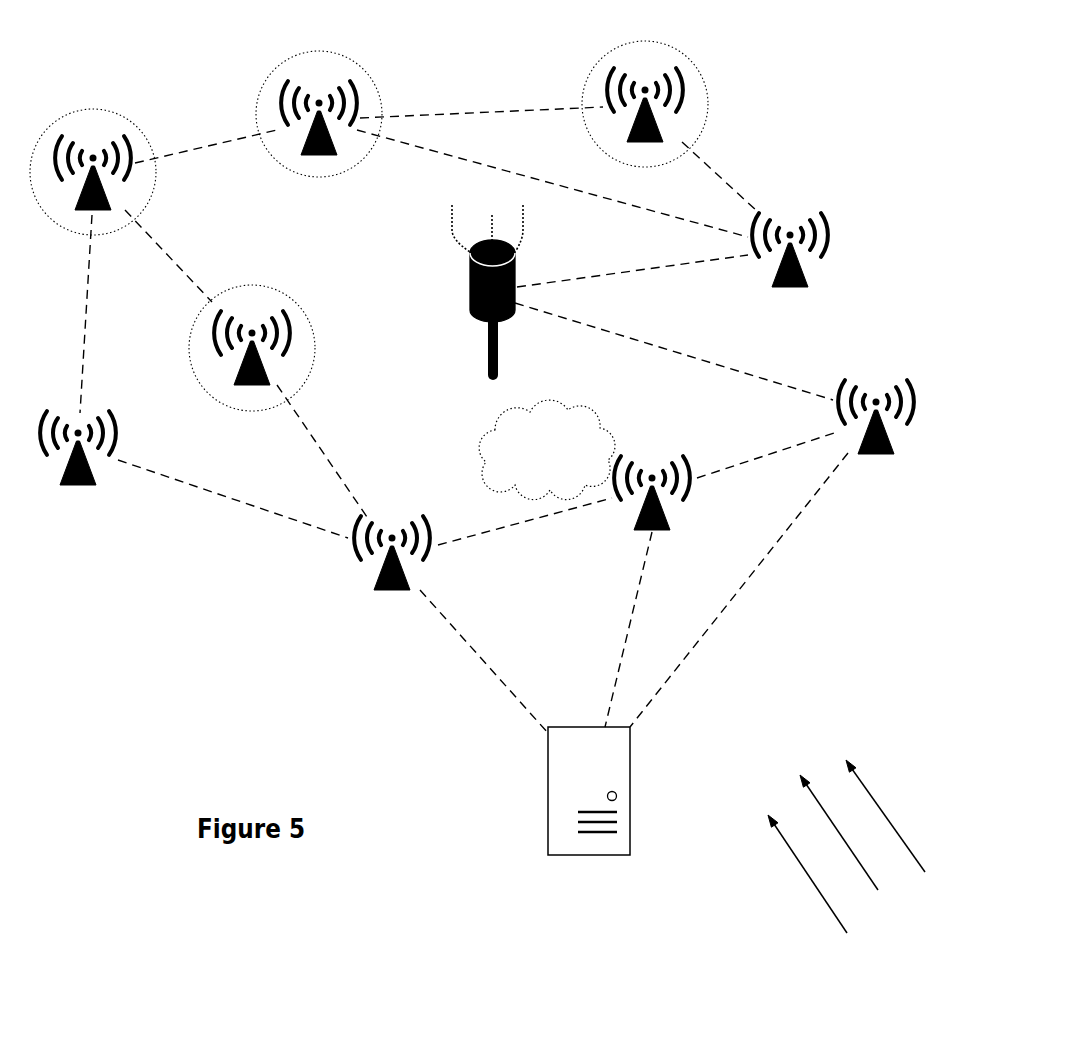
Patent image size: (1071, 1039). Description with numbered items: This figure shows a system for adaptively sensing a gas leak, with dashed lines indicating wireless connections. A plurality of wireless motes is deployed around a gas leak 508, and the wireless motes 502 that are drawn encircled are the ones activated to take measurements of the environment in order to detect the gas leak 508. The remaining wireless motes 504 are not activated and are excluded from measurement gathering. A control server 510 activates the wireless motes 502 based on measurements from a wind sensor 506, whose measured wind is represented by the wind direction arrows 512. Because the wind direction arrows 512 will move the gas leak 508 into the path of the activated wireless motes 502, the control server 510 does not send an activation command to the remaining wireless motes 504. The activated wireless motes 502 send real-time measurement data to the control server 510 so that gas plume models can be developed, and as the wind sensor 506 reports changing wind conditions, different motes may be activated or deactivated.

The activated wireless motes 502 is at (115, 138).
The remaining wireless motes 504 is at (810, 213).
The wind sensor 506 is at (452, 255).
The gas leak 508 is at (570, 410).
The control server 510 is at (548, 790).
The wind direction arrows 512 is at (898, 783).